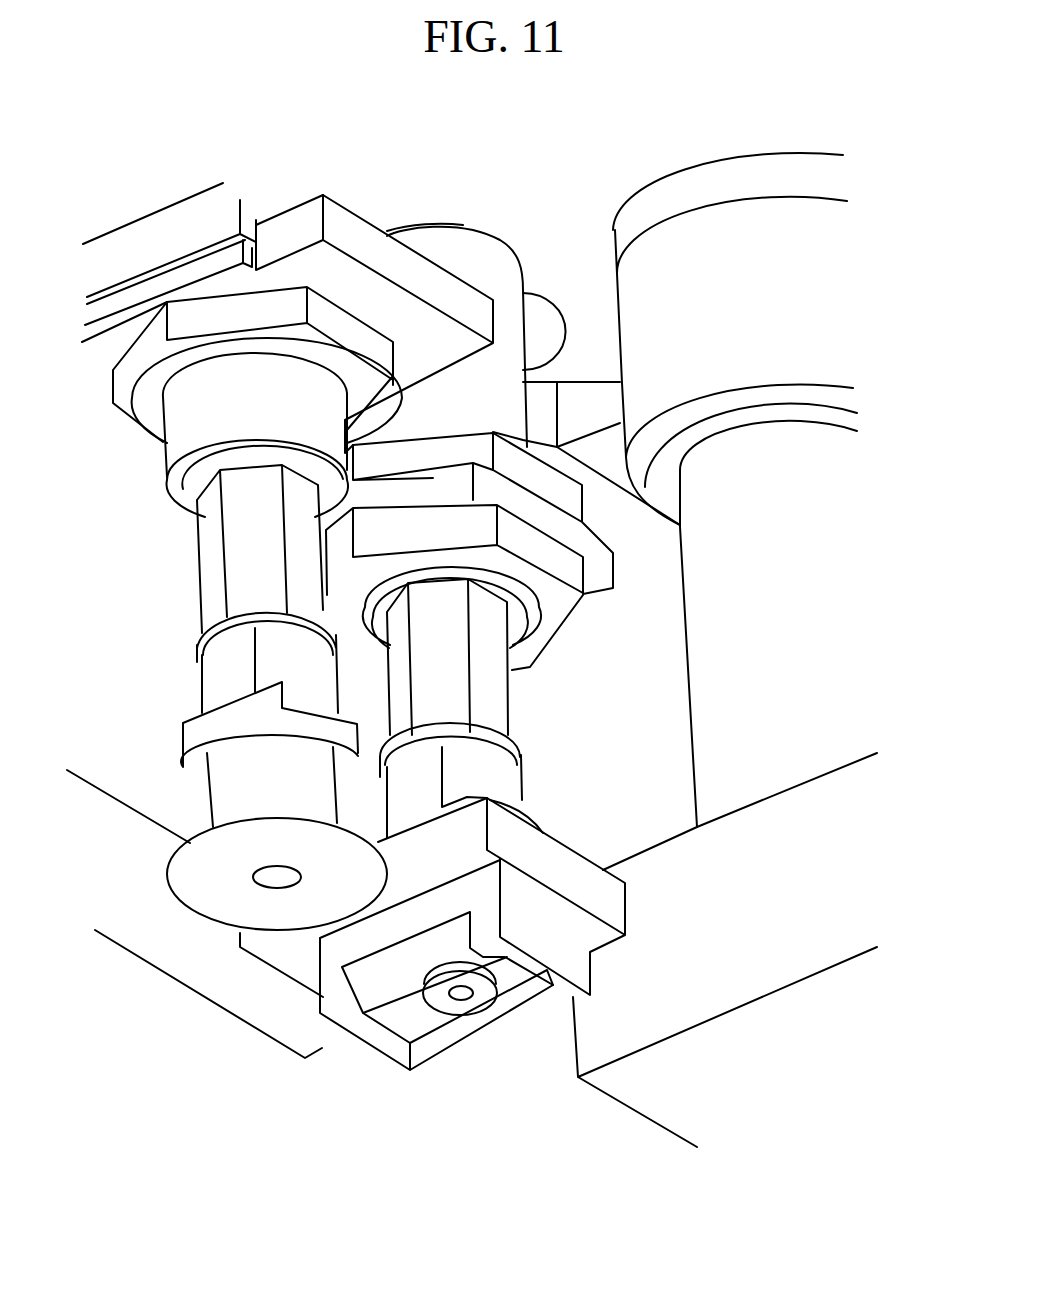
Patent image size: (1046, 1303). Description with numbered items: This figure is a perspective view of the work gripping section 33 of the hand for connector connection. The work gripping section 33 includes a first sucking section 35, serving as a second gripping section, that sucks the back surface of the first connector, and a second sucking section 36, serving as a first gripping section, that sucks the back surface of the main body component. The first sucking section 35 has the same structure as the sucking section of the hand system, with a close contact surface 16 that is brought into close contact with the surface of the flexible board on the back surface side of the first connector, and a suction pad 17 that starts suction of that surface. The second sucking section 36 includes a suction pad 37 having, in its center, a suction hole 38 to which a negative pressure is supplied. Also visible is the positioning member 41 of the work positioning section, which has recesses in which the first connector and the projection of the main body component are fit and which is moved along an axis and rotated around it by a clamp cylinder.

The close contact surface 16 is at (395, 1017).
The suction pad 17 is at (473, 1003).
The work gripping section 33 is at (112, 568).
The first sucking section 35 is at (472, 986).
The second sucking section 36 is at (222, 948).
The suction pad 37 is at (207, 897).
The suction hole 38 is at (280, 897).
The positioning member 41 is at (630, 1027).